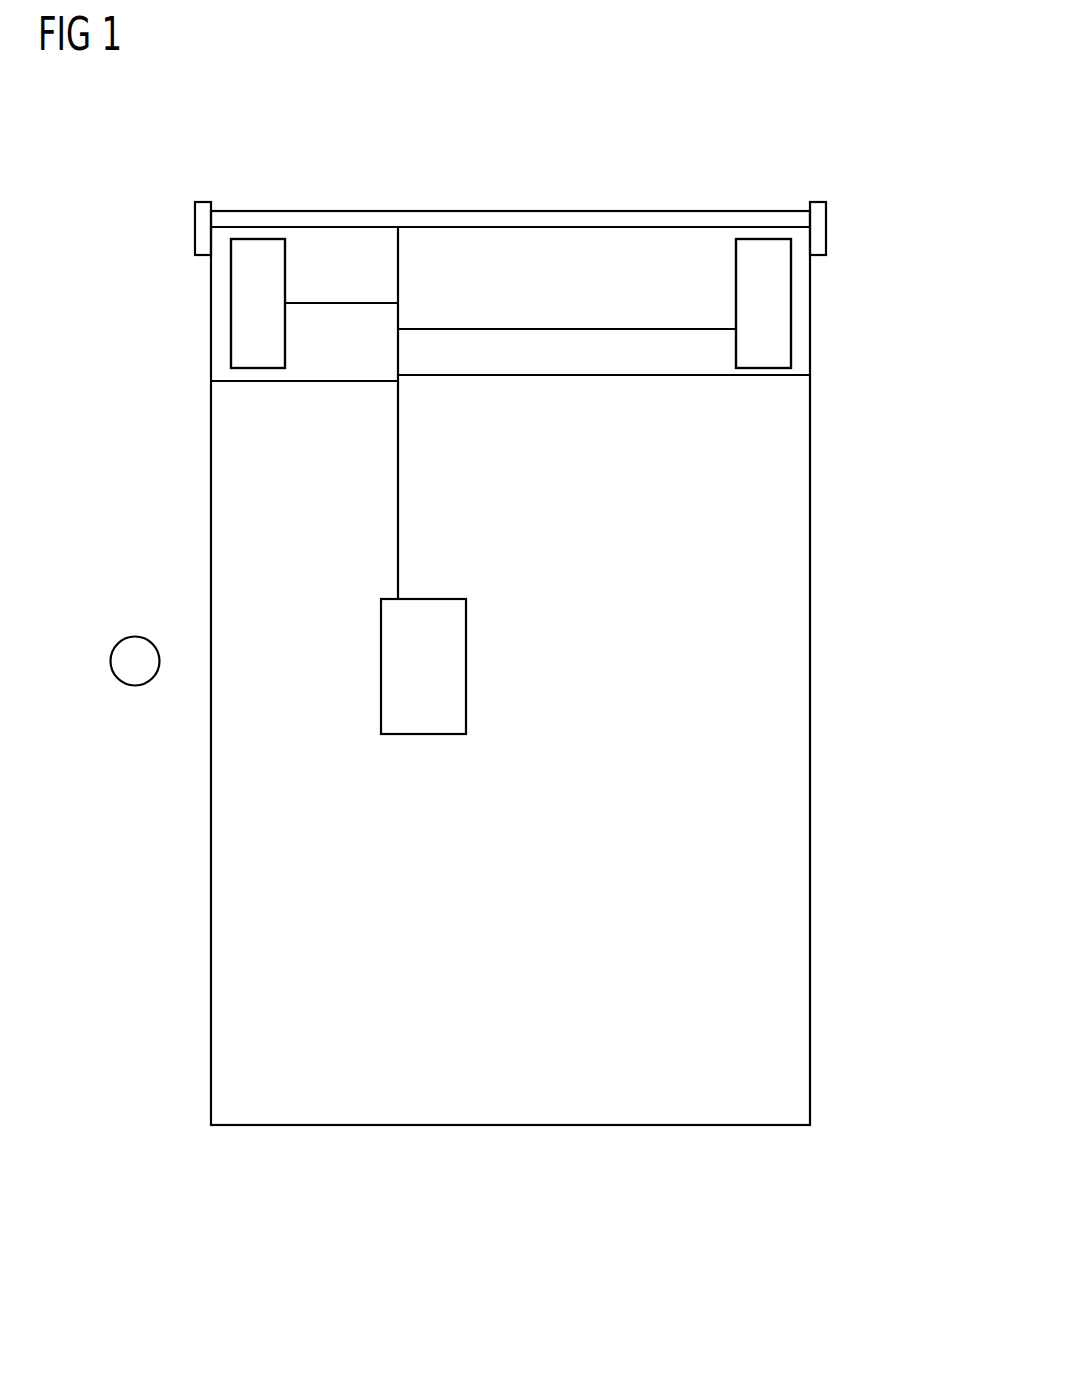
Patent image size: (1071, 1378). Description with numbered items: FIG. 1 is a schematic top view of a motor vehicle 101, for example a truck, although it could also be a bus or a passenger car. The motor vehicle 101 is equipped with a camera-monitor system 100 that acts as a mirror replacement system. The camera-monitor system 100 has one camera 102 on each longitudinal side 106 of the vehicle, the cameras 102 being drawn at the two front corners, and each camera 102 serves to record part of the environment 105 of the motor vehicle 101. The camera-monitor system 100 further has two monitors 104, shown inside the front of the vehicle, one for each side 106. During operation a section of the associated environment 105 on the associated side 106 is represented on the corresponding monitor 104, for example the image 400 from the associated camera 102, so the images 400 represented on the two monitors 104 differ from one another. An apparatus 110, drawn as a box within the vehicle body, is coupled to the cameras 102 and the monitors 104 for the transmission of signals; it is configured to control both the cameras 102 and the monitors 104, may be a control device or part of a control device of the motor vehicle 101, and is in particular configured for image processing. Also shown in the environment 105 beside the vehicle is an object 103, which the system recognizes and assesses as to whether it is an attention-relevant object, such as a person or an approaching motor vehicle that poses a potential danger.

The camera-monitor system 100 is at (832, 133).
The motor vehicle 101 is at (811, 705).
The camera 102 is at (195, 228).
The object 103 is at (134, 656).
The monitor 104 is at (258, 368).
The environment 105 is at (160, 837).
The longitudinal side 106 is at (142, 1143).
The apparatus 110 is at (467, 666).
The image 400 is at (272, 264).